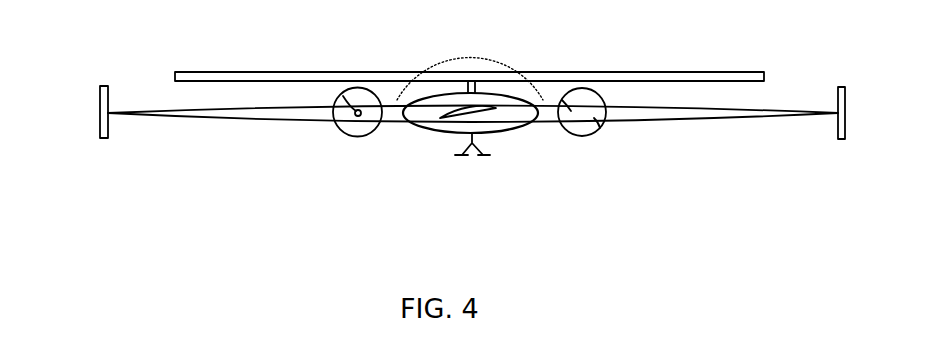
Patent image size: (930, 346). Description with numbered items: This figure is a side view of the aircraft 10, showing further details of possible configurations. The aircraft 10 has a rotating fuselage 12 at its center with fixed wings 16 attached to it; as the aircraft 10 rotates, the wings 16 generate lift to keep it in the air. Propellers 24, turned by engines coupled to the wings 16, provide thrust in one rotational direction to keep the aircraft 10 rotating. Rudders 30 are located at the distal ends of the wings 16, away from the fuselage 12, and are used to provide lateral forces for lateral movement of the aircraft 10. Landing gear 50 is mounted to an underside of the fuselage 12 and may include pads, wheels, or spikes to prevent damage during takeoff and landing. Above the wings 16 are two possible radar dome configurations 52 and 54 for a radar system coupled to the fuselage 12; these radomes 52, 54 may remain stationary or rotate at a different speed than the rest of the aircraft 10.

The aircraft 10 is at (90, 78).
The rotating fuselage 12 is at (440, 135).
The fixed wings 16 is at (260, 122).
The propellers 24 is at (362, 114).
The rudders 30 is at (102, 139).
The landing gear 50 is at (482, 156).
The radar dome (radome) configuration 52 is at (463, 59).
The radar dome (radome) configuration 54 is at (768, 73).